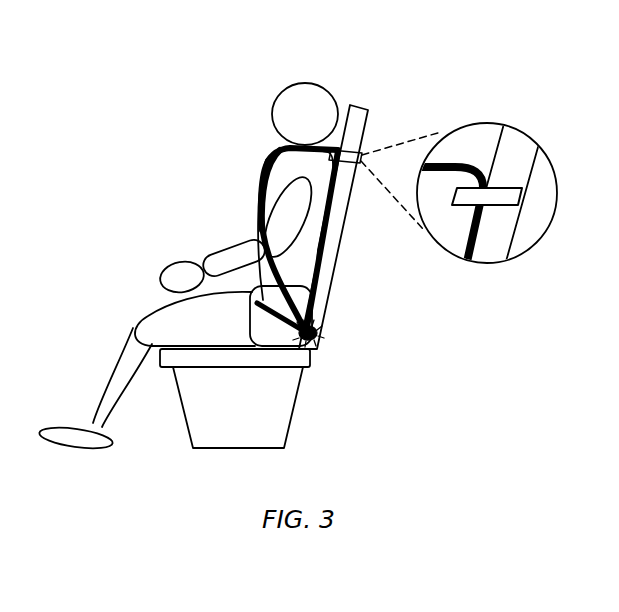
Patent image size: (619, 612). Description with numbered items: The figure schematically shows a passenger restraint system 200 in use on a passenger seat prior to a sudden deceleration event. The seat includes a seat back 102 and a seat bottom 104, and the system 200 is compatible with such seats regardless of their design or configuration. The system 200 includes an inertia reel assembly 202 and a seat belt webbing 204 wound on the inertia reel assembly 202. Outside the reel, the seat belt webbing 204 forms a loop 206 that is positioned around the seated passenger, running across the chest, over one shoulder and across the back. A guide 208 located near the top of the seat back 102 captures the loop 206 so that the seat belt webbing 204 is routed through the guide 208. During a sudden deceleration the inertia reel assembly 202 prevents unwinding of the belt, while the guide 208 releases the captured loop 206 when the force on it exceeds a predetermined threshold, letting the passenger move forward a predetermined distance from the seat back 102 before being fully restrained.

The passenger restraint system 200 is at (172, 68).
The seat back 102 is at (372, 123).
The seat bottom 104 is at (154, 368).
The inertia reel assembly 202 is at (325, 327).
The seat belt webbing 204 is at (253, 205).
The loop 206 is at (256, 158).
The guide 208 is at (512, 197).